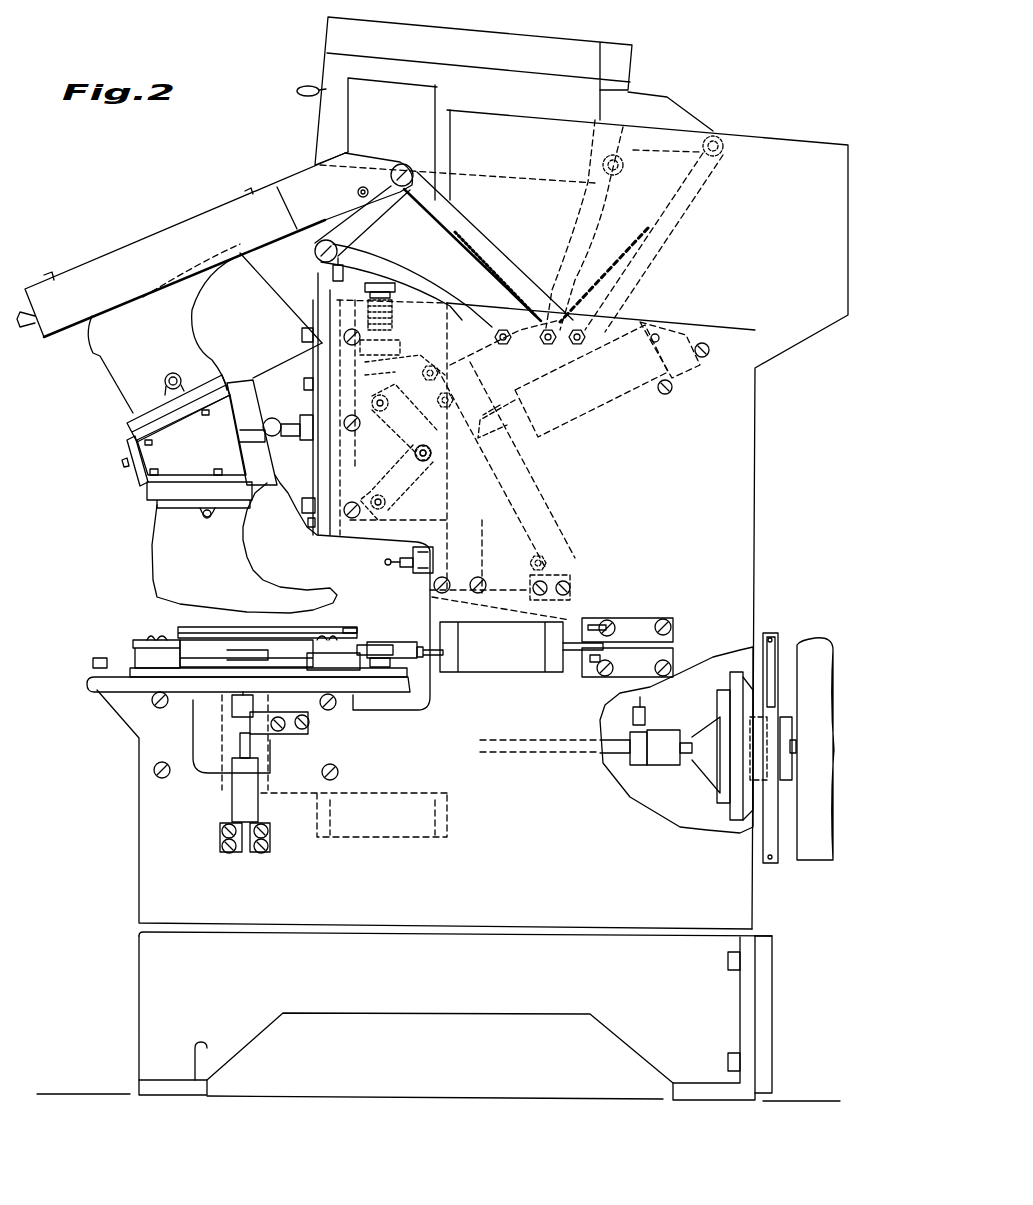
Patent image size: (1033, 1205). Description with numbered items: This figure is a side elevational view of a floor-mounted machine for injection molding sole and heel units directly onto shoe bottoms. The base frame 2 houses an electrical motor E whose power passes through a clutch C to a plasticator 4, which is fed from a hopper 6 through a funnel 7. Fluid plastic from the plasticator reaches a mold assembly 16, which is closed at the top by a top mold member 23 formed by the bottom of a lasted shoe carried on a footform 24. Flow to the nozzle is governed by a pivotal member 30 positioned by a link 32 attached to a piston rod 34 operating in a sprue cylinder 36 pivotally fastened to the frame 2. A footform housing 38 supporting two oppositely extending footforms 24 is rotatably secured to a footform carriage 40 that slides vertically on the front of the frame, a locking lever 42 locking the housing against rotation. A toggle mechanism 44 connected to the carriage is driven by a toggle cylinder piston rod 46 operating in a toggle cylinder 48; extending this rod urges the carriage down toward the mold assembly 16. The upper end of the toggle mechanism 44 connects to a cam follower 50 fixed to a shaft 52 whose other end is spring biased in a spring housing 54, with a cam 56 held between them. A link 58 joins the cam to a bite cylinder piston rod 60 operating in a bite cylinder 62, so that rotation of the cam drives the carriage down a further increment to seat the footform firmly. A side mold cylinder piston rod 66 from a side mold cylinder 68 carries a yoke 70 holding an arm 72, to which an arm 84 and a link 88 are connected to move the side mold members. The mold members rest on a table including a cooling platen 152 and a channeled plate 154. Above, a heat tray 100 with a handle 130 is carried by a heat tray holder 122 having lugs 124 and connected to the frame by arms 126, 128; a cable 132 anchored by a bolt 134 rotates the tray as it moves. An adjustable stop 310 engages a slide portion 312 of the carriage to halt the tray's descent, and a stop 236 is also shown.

The base frame 2 is at (757, 540).
The plasticator 4 is at (480, 793).
The hopper 6 is at (612, 447).
The funnel 7 is at (505, 603).
The mold assembly 16 is at (88, 622).
The top mold member 23 is at (266, 558).
The footform 24 is at (113, 355).
The pivotal member 30 is at (232, 706).
The link 32 is at (245, 720).
The piston rod 34 is at (243, 745).
The sprue cylinder 36 is at (235, 812).
The footform housing 38 is at (132, 470).
The footform carriage 40 is at (278, 372).
The locking lever 42 is at (276, 442).
The toggle mechanism 44 is at (406, 490).
The toggle cylinder piston rod 46 is at (503, 432).
The toggle cylinder 48 is at (597, 392).
The cam follower 50 is at (395, 410).
The shaft 52 is at (398, 352).
The spring housing 54 is at (398, 323).
The cam 56 is at (420, 362).
The link 58 is at (424, 375).
The bite cylinder piston rod 60 is at (452, 398).
The bite cylinder 62 is at (545, 528).
The side mold cylinder piston rod 66 is at (425, 646).
The side mold cylinder 68 is at (517, 675).
The yoke 70 is at (393, 642).
The arm 72 is at (368, 642).
The arm 84 is at (250, 628).
The link 88 is at (170, 631).
The heat tray 100 is at (330, 24).
The heat tray holder 122 is at (314, 172).
The lugs 124 is at (345, 215).
The arm 126 is at (375, 260).
The arm 128 is at (460, 222).
The handle 130 is at (305, 86).
The cable 132 is at (492, 252).
The bolt 134 is at (540, 342).
The cooling platen 152 is at (95, 666).
The channeled plate 154 is at (92, 692).
The stop 236 is at (385, 561).
The adjustable stop 310 is at (330, 268).
The slide portion 312 is at (318, 290).
The clutch C is at (725, 800).
The electrical motor E is at (817, 858).